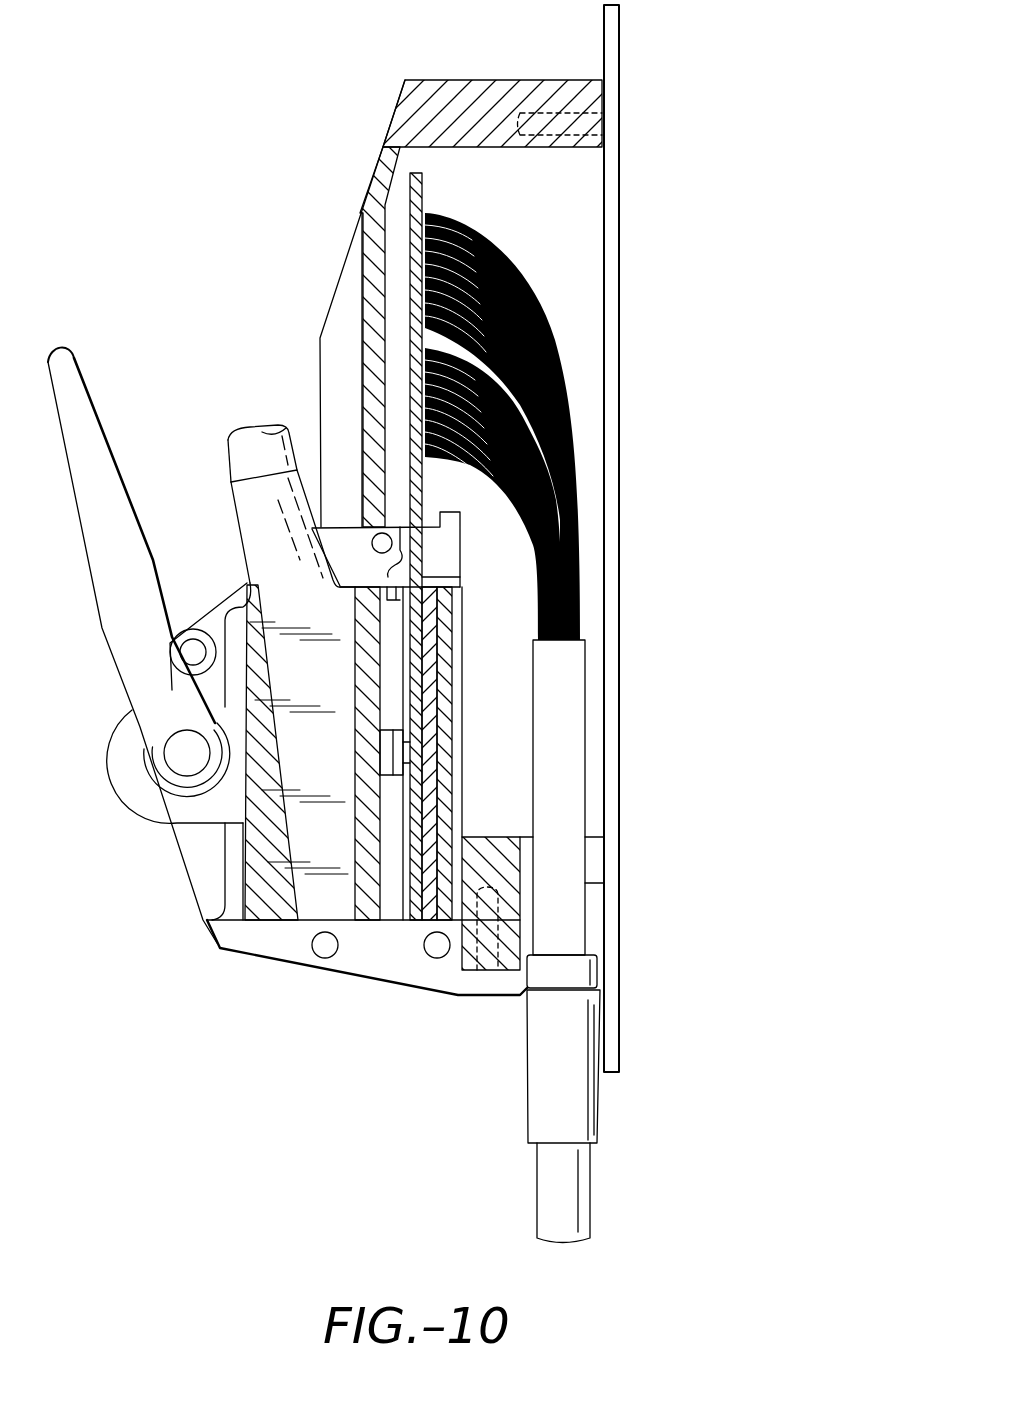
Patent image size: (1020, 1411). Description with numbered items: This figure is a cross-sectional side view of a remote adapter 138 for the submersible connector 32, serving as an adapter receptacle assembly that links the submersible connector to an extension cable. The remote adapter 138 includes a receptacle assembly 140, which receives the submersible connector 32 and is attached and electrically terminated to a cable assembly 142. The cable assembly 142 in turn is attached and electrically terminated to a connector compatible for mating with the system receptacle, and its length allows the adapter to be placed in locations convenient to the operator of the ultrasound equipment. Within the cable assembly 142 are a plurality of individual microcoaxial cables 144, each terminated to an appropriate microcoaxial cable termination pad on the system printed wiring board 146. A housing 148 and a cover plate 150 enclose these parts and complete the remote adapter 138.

The submersible connector 32 is at (320, 678).
The remote adapter 138 is at (266, 1076).
The receptacle assembly 140 is at (232, 210).
The cable assembly 142 is at (562, 1205).
The microcoaxial cables 144 is at (477, 240).
The system printed wiring board 146 is at (423, 497).
The housing 148 is at (490, 100).
The cover plate 150 is at (620, 707).